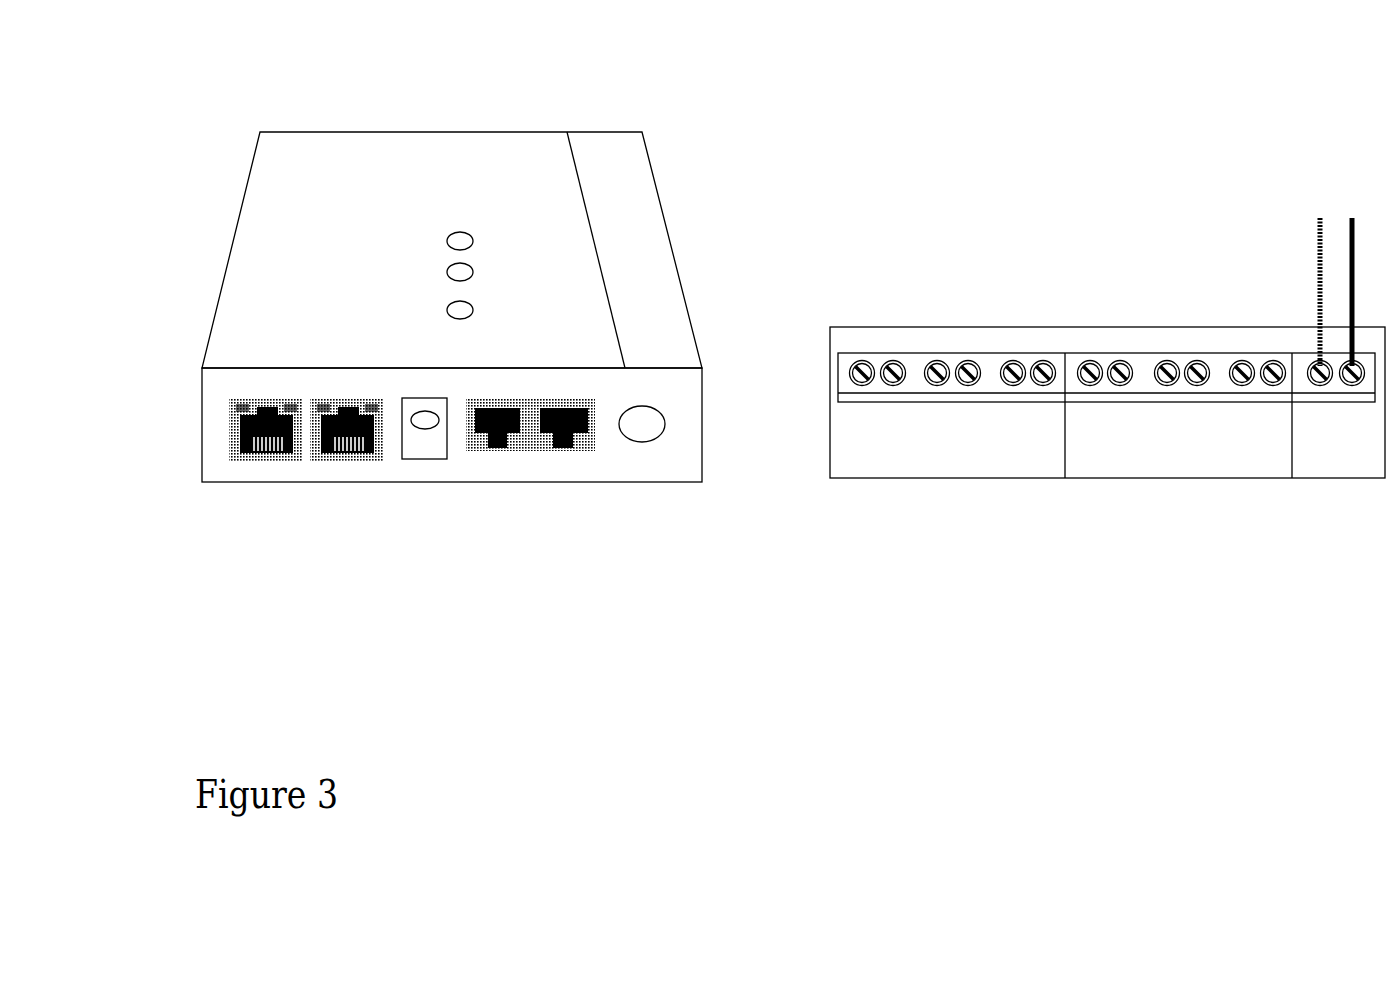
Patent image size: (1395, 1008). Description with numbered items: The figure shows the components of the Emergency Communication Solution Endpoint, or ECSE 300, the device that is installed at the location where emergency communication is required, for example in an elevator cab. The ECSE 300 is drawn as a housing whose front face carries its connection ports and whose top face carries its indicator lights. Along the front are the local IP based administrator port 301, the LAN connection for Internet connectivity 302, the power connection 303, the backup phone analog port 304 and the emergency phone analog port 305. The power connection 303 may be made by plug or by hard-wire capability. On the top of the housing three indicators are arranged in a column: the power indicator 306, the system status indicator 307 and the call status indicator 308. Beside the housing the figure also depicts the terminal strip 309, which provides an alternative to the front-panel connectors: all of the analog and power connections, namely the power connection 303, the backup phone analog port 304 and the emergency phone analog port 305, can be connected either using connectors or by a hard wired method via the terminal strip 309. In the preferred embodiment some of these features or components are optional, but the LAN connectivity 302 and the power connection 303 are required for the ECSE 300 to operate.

The Emergency Communication Solution Endpoint (ECSE) 300 is at (242, 165).
The local IP based administrator port 301 is at (265, 468).
The LAN connection for Internet connectivity 302 is at (350, 468).
The power connection 303 is at (422, 468).
The backup phone analog port 304 is at (507, 468).
The emergency phone analog port 305 is at (565, 468).
The power indicator 306 is at (438, 242).
The system status indicator 307 is at (438, 272).
The call status indicator 308 is at (438, 310).
The terminal strip 309 is at (608, 128).